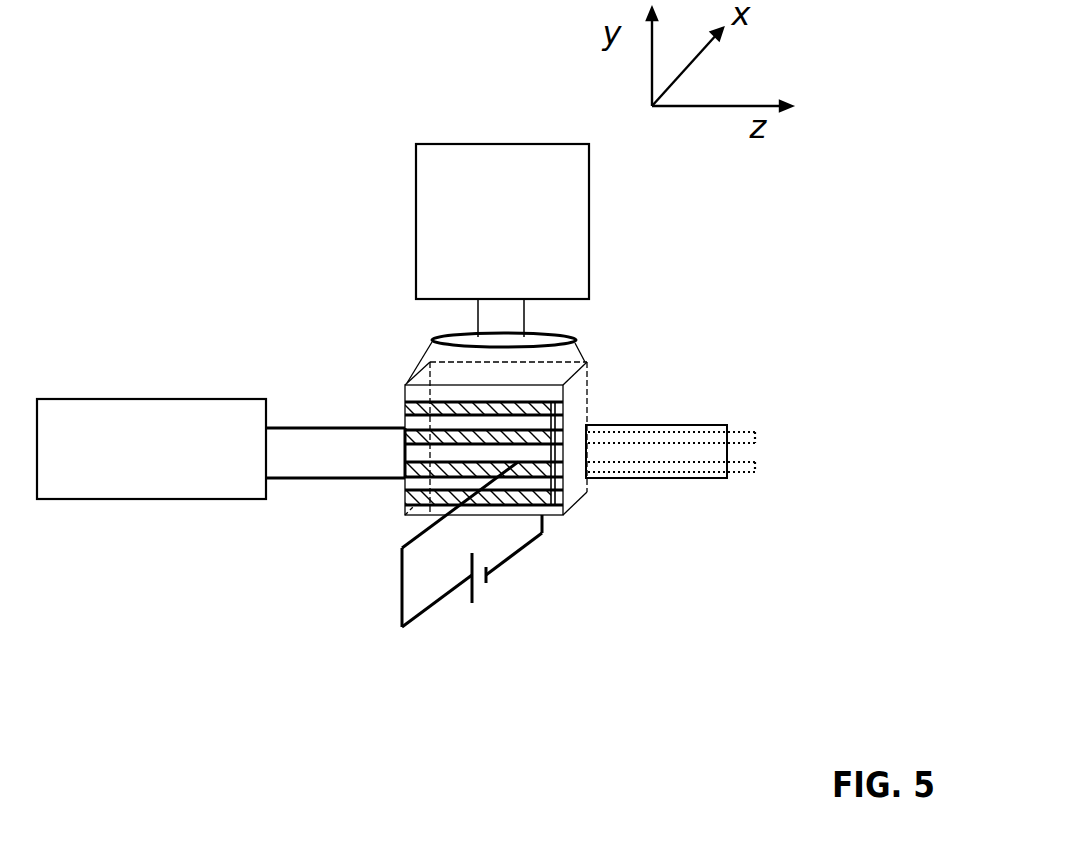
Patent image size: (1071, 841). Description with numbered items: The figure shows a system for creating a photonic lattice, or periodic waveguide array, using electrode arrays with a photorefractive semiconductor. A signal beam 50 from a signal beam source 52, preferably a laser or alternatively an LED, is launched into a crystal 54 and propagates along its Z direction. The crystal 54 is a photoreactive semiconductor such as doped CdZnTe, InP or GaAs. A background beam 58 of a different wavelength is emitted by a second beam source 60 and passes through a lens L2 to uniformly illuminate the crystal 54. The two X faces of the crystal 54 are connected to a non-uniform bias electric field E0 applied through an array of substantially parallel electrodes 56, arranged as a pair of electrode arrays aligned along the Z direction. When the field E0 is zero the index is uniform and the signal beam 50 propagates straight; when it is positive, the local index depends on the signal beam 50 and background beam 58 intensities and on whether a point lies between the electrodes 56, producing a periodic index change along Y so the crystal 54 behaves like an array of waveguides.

The signal beam 50 is at (510, 484).
The signal beam source 52 is at (202, 392).
The crystal 54 is at (402, 478).
The electrodes 56 is at (553, 518).
The background beam 58 is at (524, 318).
The background beam source 60 is at (589, 210).
The lens L2 is at (432, 338).
The bias electric field E0 is at (514, 605).